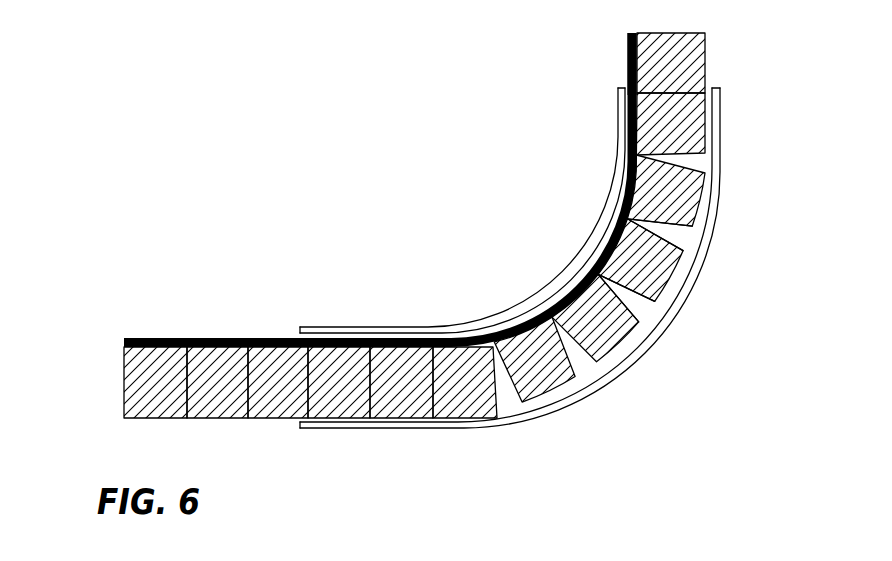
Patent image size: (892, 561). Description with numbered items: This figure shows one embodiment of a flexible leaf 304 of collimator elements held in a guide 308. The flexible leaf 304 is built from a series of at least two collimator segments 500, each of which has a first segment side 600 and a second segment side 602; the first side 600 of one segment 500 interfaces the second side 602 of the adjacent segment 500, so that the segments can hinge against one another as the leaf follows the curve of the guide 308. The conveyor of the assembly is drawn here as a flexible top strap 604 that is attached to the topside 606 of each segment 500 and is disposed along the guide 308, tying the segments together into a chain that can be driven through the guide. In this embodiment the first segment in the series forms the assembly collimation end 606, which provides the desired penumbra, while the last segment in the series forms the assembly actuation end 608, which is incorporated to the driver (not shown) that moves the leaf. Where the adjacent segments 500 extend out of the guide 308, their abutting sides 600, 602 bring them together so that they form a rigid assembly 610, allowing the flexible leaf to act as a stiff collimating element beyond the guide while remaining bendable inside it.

The flexible leaf 304 is at (147, 311).
The guide 308 is at (428, 327).
The collimator segment 500 is at (673, 278).
The first segment side 600 is at (647, 323).
The second segment side 602 is at (677, 242).
The flexible top strap 604 is at (220, 340).
The assembly collimation end 606 is at (458, 258).
The assembly actuation end 608 is at (596, 38).
The rigid assembly 610 is at (125, 435).